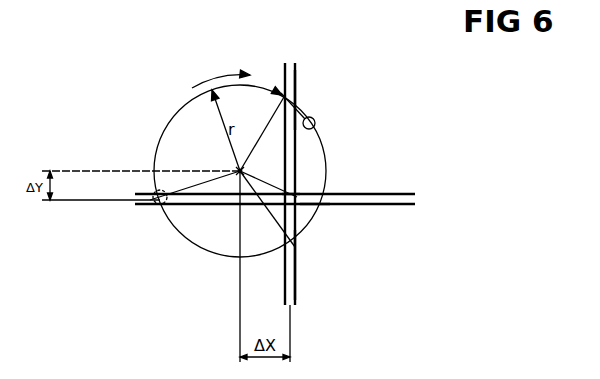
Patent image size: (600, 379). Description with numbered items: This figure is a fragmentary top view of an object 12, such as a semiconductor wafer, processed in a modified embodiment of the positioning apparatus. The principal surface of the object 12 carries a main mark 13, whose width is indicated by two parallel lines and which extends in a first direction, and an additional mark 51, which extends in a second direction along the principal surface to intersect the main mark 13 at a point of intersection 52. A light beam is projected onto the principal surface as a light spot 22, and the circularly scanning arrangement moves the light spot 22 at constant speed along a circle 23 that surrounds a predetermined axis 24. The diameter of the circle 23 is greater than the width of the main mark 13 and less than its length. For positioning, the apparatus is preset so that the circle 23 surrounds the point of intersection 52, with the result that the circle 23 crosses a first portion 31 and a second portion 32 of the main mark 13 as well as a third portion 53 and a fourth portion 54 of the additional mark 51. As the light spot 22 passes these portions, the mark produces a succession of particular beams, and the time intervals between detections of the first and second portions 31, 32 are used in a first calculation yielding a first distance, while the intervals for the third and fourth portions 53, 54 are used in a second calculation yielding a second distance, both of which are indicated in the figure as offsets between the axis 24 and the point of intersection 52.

The object 12 is at (93, 264).
The mark 13 is at (287, 63).
The light spot 22 is at (316, 124).
The circle 23 is at (201, 249).
The predetermined axis 24 is at (230, 166).
The first portion 31 is at (296, 98).
The second portion 32 is at (299, 250).
The additional mark 51 is at (388, 194).
The point of intersection 52 is at (298, 195).
The third portion 53 is at (308, 201).
The fourth portion 54 is at (156, 207).